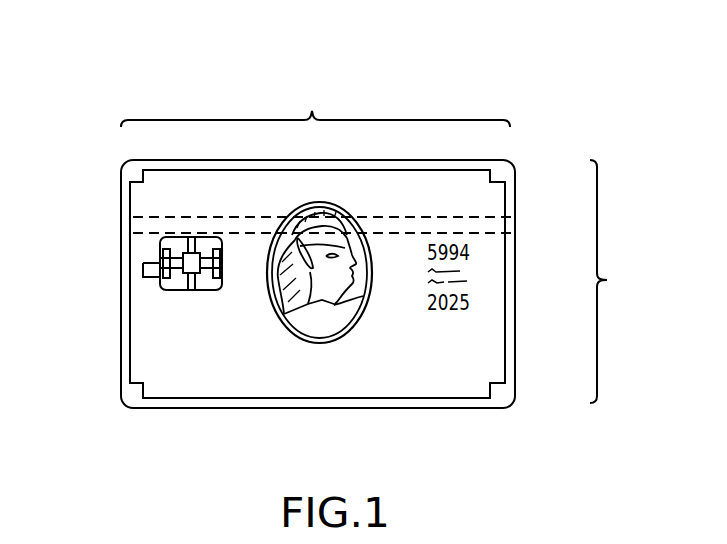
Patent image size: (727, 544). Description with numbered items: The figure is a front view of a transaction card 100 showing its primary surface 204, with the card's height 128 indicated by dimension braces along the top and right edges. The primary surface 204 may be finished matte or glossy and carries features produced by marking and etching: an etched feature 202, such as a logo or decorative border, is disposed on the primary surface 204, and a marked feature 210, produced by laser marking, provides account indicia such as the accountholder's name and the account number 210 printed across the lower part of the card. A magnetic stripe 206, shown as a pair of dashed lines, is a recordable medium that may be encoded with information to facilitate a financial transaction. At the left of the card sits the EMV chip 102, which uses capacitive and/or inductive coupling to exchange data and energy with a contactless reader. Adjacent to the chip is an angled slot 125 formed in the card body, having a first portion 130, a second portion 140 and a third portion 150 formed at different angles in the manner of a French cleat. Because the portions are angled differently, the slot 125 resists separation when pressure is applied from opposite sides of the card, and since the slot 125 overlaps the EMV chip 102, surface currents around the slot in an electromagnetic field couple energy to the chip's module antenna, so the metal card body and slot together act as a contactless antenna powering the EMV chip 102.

The transaction card 100 is at (113, 100).
The EMV chip 102 is at (167, 284).
The angled slot 125 is at (153, 247).
The height 128 is at (384, 240).
The first portion 130 is at (143, 277).
The second portion 140 is at (143, 265).
The third portion 150 is at (150, 263).
The etched feature 202 is at (362, 167).
The primary surface 204 is at (490, 202).
The magnetic stripe 206 is at (405, 223).
The marked feature / account number 210 is at (195, 390).